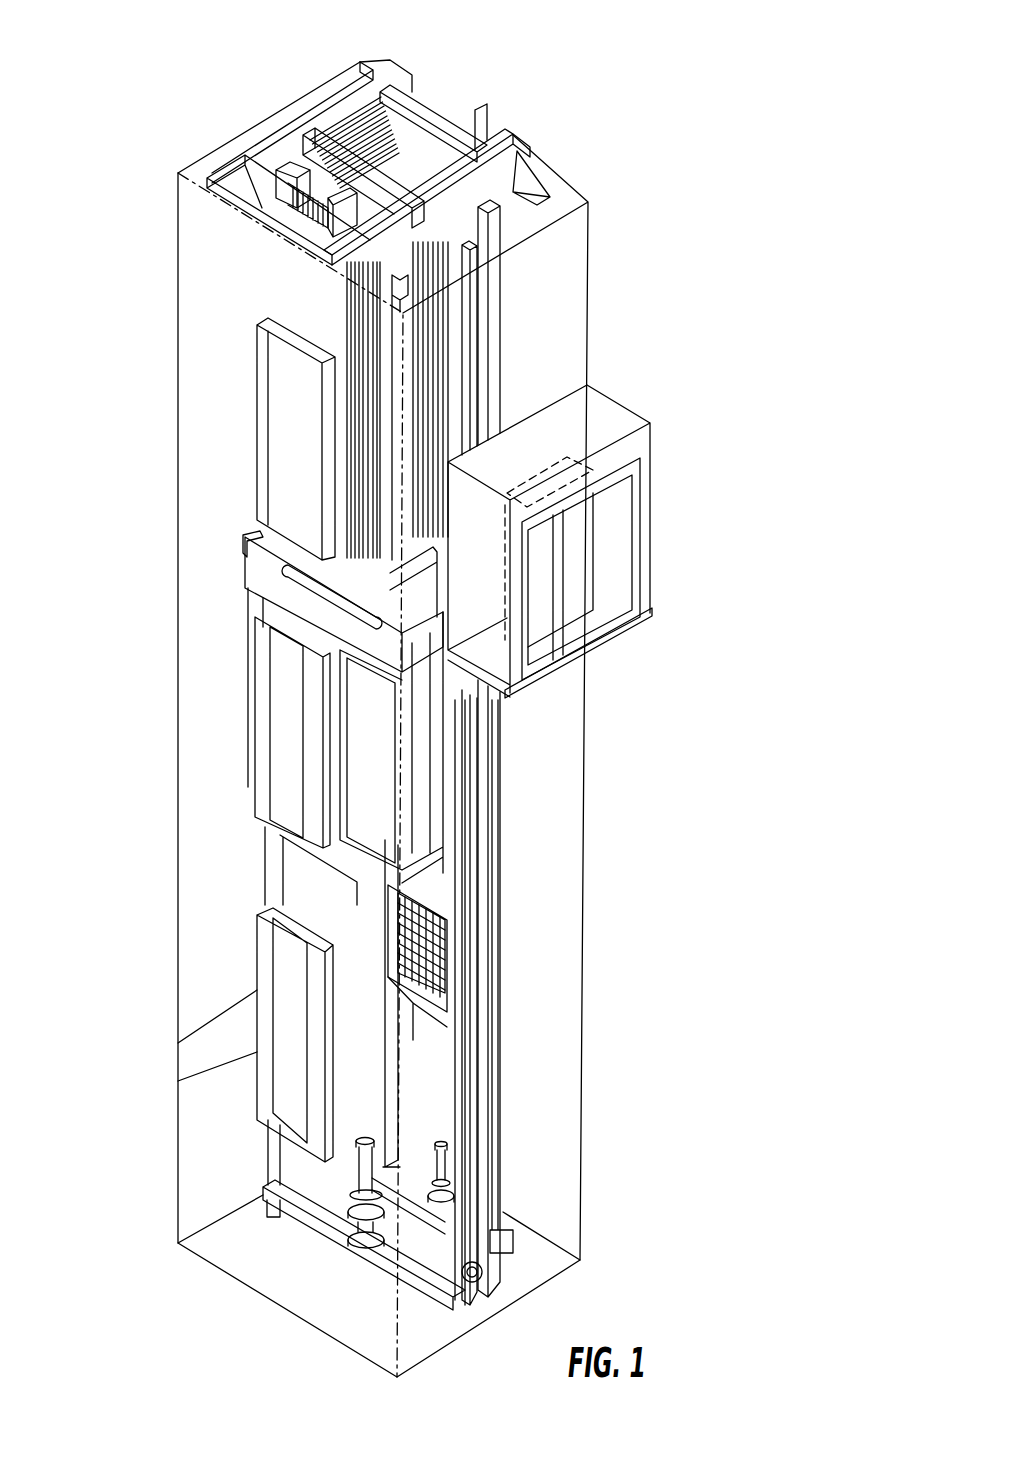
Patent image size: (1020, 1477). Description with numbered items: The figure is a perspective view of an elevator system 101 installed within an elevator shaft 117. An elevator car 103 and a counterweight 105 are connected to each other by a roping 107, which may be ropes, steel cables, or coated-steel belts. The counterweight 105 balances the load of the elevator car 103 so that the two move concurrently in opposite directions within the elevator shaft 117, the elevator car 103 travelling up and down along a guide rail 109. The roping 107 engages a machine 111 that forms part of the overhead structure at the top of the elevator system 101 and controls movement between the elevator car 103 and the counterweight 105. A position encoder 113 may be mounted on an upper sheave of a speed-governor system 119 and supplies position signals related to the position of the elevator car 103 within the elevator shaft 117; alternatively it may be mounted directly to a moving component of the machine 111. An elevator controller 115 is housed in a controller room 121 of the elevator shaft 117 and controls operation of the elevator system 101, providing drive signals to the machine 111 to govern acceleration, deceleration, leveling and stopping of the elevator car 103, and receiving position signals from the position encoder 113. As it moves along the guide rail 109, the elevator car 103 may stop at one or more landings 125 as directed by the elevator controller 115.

The elevator system 101 is at (618, 85).
The elevator car 103 is at (378, 763).
The counterweight 105 is at (445, 960).
The roping 107 is at (382, 428).
The guide rail 109 is at (482, 882).
The machine 111 is at (290, 166).
The position encoder 113 is at (470, 267).
The elevator controller 115 is at (585, 558).
The elevator shaft 117 is at (232, 885).
The speed-governor system 119 is at (490, 322).
The controller room 121 is at (662, 411).
The landings 125 is at (257, 425).